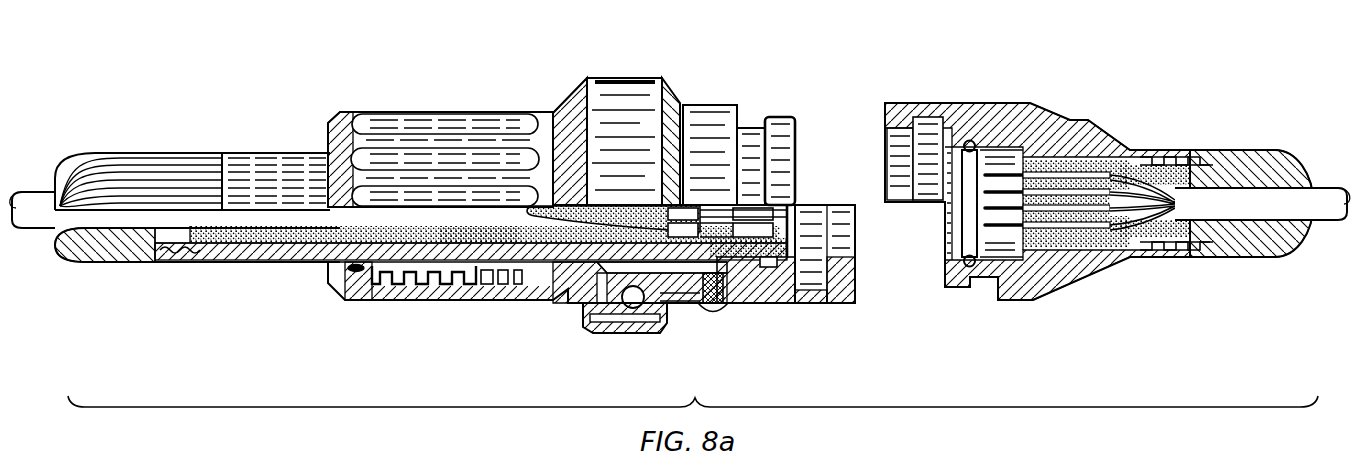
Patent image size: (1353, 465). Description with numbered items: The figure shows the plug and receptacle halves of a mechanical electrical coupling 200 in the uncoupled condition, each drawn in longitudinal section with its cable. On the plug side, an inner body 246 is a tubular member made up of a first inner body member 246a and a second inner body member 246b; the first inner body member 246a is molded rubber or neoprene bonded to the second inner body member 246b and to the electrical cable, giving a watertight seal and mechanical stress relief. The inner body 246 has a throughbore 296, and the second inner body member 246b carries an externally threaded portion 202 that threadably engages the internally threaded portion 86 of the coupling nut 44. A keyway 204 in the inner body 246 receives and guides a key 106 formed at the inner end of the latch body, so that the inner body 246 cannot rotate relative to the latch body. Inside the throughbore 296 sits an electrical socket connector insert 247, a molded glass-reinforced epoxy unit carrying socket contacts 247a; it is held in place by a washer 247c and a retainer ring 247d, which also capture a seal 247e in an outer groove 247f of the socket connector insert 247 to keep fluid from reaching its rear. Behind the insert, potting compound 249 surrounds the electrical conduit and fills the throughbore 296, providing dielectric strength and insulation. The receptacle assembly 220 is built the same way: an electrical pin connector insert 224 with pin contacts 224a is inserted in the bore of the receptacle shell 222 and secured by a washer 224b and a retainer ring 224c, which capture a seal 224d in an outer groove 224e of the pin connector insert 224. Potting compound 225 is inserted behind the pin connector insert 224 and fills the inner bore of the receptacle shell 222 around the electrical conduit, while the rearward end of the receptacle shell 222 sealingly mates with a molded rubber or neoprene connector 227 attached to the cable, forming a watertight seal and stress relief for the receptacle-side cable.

The electrical coupling 200 is at (838, 88).
The externally threaded portion 202 is at (406, 282).
The keyway 204 is at (378, 277).
The inner body 246 is at (437, 262).
The first inner body member 246a is at (137, 258).
The second inner body member 246b is at (332, 255).
The potting compound 249 is at (468, 240).
The throughbore 296 is at (276, 240).
The internally threaded portion 86 is at (494, 285).
The coupling nut 44 is at (522, 300).
The key 106 is at (566, 305).
The electrical socket connector insert 247 is at (742, 258).
The socket contacts 247a is at (767, 212).
The washer 247c is at (790, 243).
The retainer ring 247d is at (757, 250).
The seal 247e is at (754, 262).
The outer groove 247f is at (750, 262).
The receptacle assembly 220 is at (1077, 130).
The receptacle shell 222 is at (1133, 150).
The electrical pin connector insert 224 is at (1057, 237).
The pin contacts 224a is at (993, 223).
The washer 224b is at (1028, 158).
The retainer ring 224c is at (1030, 165).
The seal 224d is at (1037, 242).
The outer groove 224e is at (1033, 248).
The potting compound 225 is at (1178, 162).
The molded rubber or neoprene connector 227 is at (1233, 170).